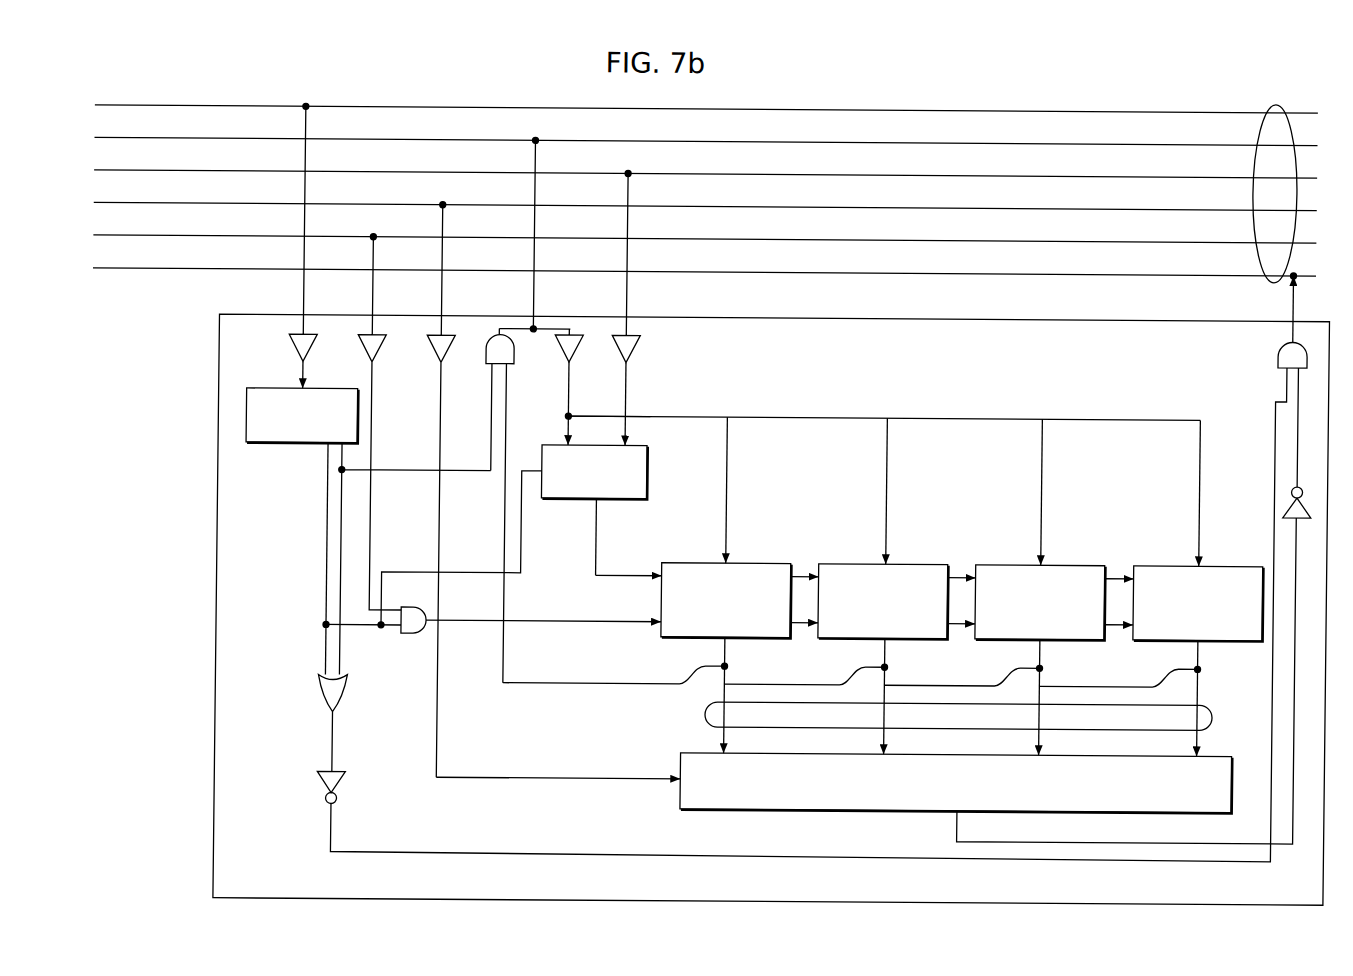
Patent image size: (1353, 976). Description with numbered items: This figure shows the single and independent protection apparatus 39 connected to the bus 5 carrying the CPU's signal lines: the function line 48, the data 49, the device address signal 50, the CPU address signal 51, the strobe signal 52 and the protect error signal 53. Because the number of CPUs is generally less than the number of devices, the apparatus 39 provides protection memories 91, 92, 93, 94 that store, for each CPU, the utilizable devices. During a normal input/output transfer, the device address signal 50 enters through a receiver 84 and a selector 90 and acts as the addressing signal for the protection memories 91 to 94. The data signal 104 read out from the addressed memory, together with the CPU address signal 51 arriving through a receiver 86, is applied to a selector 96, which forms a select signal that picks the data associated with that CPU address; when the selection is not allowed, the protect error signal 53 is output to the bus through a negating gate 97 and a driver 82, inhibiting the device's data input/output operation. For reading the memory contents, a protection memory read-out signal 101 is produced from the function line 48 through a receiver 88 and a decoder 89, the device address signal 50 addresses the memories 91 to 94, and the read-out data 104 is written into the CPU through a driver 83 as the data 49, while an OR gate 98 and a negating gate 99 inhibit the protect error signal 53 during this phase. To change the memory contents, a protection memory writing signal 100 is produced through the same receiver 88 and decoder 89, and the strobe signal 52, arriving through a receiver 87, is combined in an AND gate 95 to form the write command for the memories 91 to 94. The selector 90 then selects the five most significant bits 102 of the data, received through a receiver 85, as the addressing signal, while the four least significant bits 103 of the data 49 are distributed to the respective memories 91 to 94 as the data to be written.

The bus 5 is at (1269, 181).
The protection apparatus 39 is at (212, 525).
The function line 48 is at (92, 109).
The data 49 is at (92, 142).
The device address signal 50 is at (93, 174).
The CPU address signal 51 is at (91, 207).
The strobe signal 52 is at (92, 239).
The protect error signal 53 is at (92, 272).
The driver 82 is at (1276, 348).
The driver 83 is at (482, 349).
The receiver 84 is at (612, 350).
The receiver 85 is at (556, 350).
The receiver 86 is at (426, 350).
The receiver 87 is at (358, 350).
The receiver 88 is at (291, 353).
The decoder 89 is at (275, 448).
The selector 90 is at (650, 474).
The protection memory 91 is at (700, 545).
The protection memory 92 is at (852, 564).
The protection memory 93 is at (1012, 563).
The protection memory 94 is at (1166, 562).
The AND gate 95 is at (398, 642).
The selector 96 is at (750, 811).
The negating gate 97 is at (1283, 505).
The OR gate 98 is at (314, 696).
The negating gate 99 is at (314, 791).
The protection memory writing signal 100 is at (314, 552).
The protection memory read-out signal 101 is at (398, 472).
The five most significant bits 102 is at (566, 418).
The four least significant bits 103 is at (846, 416).
The data signal 104 is at (708, 716).